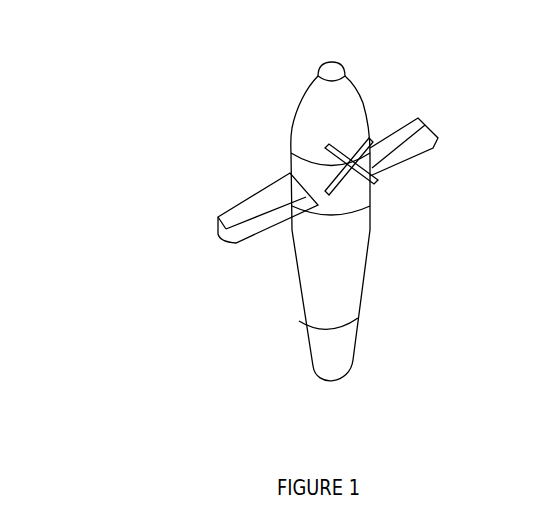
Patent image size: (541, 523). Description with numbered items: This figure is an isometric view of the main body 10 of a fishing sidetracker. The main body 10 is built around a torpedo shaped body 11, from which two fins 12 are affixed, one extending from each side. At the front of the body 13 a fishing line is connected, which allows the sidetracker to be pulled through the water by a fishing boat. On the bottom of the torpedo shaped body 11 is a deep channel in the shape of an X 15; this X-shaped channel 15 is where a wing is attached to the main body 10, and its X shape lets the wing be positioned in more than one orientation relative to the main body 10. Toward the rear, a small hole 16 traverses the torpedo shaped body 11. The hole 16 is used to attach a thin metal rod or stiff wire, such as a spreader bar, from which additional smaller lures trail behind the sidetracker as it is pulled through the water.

The main body 10 is at (100, 140).
The torpedo shaped body 11 is at (369, 84).
The fins 12 is at (203, 231).
The front of the body 13 is at (313, 68).
The X-shaped channel 15 is at (384, 176).
The hole 16 is at (296, 323).